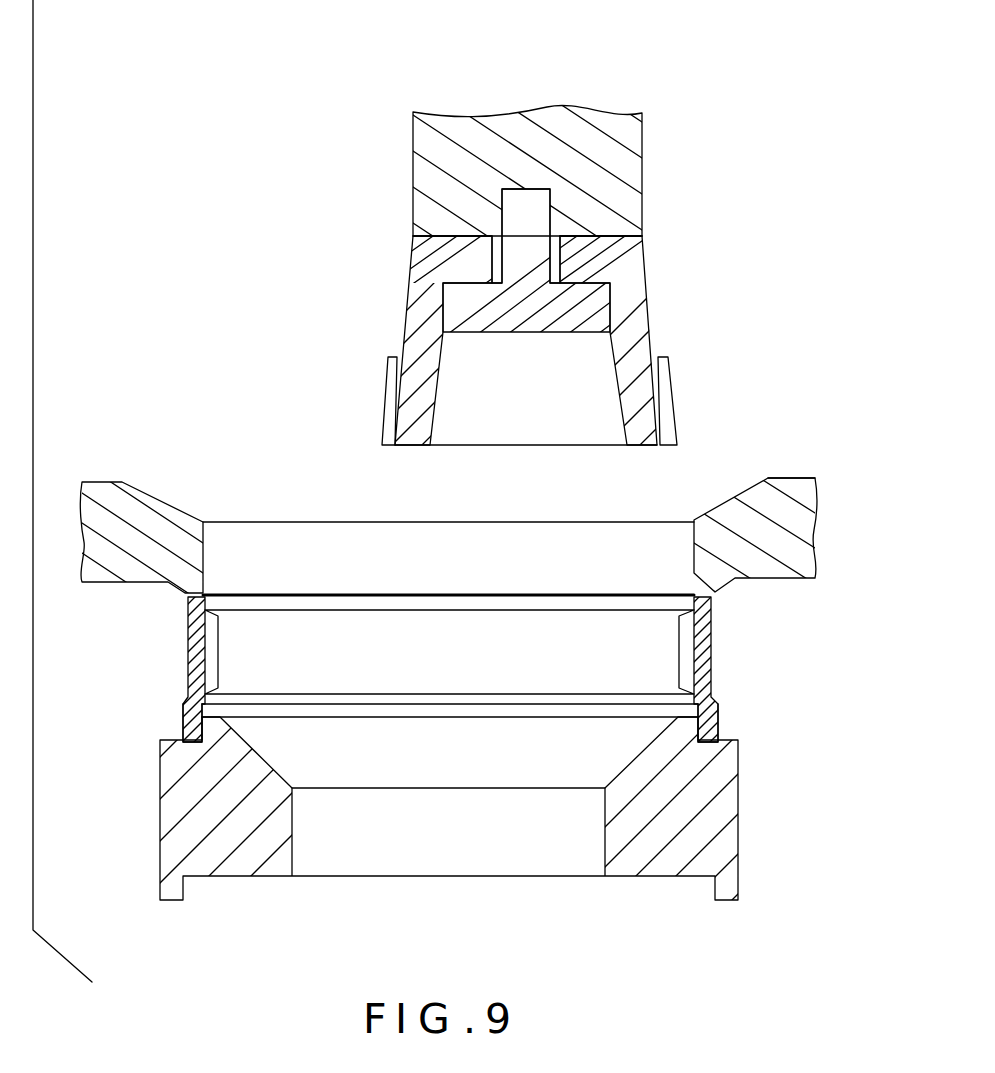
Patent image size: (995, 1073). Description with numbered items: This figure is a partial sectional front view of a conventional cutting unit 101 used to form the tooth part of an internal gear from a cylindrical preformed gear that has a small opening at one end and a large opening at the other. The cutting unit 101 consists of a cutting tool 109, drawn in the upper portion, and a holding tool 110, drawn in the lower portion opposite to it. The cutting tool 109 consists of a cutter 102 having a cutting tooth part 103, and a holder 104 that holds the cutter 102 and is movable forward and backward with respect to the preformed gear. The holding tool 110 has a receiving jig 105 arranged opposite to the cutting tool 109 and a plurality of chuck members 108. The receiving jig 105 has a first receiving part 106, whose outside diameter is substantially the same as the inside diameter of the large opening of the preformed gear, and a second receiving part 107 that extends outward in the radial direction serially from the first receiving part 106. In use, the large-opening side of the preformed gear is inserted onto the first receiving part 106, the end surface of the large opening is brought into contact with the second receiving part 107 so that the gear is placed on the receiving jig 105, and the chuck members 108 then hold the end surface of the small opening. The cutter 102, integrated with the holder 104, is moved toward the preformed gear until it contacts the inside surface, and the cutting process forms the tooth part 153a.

The cutting unit 101 is at (625, 86).
The cutter 102 is at (652, 313).
The cutting tooth part 103 is at (665, 392).
The holder 104 is at (643, 157).
The receiving jig 105 is at (740, 800).
The first receiving part 106 is at (687, 727).
The second receiving part 107 is at (170, 742).
The chuck members 108 is at (725, 517).
The cutting tool 109 is at (687, 239).
The holding tool 110 is at (846, 505).
The tooth part 153a is at (213, 658).